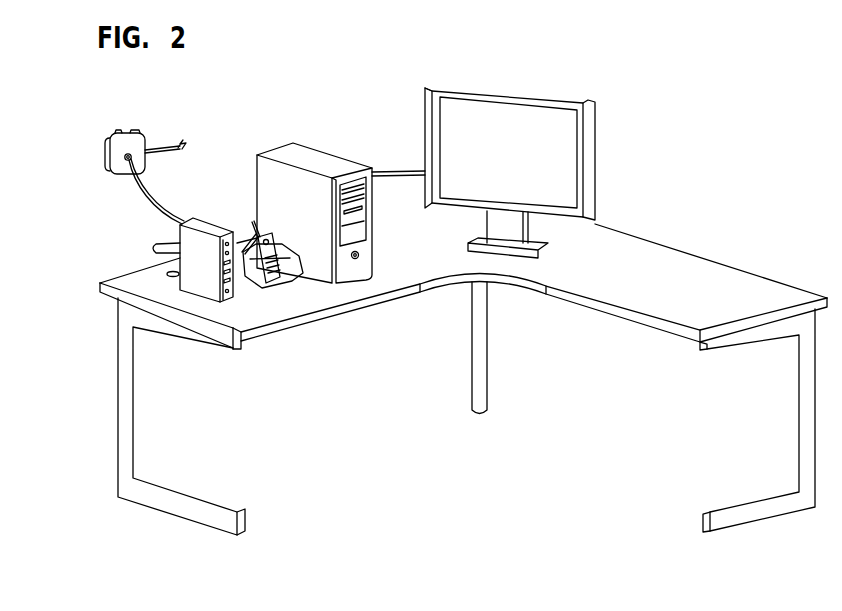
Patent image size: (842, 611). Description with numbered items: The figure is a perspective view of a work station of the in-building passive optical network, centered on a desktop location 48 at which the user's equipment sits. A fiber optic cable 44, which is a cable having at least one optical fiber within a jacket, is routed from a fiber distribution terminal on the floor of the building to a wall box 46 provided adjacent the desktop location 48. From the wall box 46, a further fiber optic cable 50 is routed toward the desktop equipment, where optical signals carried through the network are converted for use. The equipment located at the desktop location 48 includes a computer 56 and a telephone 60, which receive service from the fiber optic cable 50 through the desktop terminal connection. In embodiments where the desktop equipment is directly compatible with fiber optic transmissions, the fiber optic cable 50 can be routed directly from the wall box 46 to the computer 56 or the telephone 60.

The fiber optic cable 44 is at (163, 144).
The wall box 46 is at (124, 133).
The desktop location 48 is at (718, 186).
The fiber optic cable 50 is at (142, 199).
The computer 56 is at (317, 158).
The telephone 60 is at (283, 283).